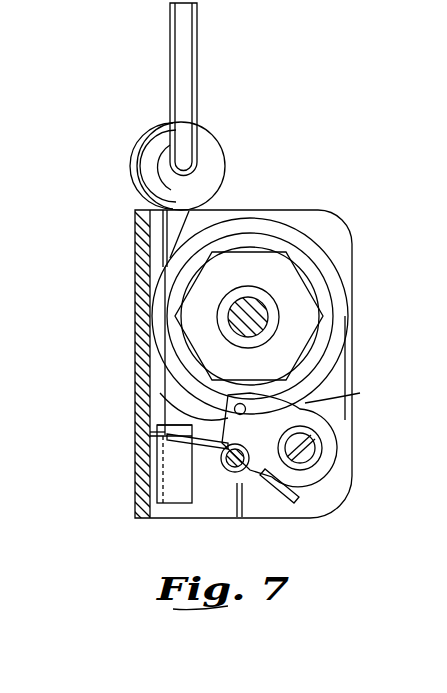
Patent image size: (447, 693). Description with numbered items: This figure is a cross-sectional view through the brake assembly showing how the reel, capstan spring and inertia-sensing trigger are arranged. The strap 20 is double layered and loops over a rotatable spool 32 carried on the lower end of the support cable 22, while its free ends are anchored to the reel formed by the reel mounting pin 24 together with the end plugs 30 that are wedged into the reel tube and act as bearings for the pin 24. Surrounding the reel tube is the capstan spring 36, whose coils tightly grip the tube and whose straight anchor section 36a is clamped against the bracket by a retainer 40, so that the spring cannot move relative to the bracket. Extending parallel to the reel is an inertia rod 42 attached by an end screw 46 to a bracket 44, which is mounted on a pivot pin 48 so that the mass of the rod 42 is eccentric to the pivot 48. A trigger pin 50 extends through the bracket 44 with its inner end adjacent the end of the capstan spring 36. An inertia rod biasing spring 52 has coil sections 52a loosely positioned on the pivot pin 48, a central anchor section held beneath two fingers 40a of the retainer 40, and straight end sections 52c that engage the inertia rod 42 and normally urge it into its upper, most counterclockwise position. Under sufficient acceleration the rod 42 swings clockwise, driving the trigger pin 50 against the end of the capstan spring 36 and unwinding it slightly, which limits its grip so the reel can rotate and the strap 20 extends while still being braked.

The strap 20 is at (205, 215).
The support cable 22 is at (186, 43).
The reel mounting pin 24 is at (248, 346).
The end plug 30 is at (288, 282).
The rotatable spool 32 is at (147, 147).
The capstan spring 36 is at (292, 235).
The anchor section 36a is at (165, 430).
The retainer 40 is at (168, 477).
The fingers 40a is at (225, 424).
The inertia rod 42 is at (327, 482).
The bracket 44 is at (310, 413).
The end screw 46 is at (320, 448).
The pivot pin 48 is at (245, 470).
The trigger pin 50 is at (235, 405).
The inertia rod biasing spring 52 is at (177, 455).
The coil section 52a is at (231, 470).
The end section 52c is at (300, 495).